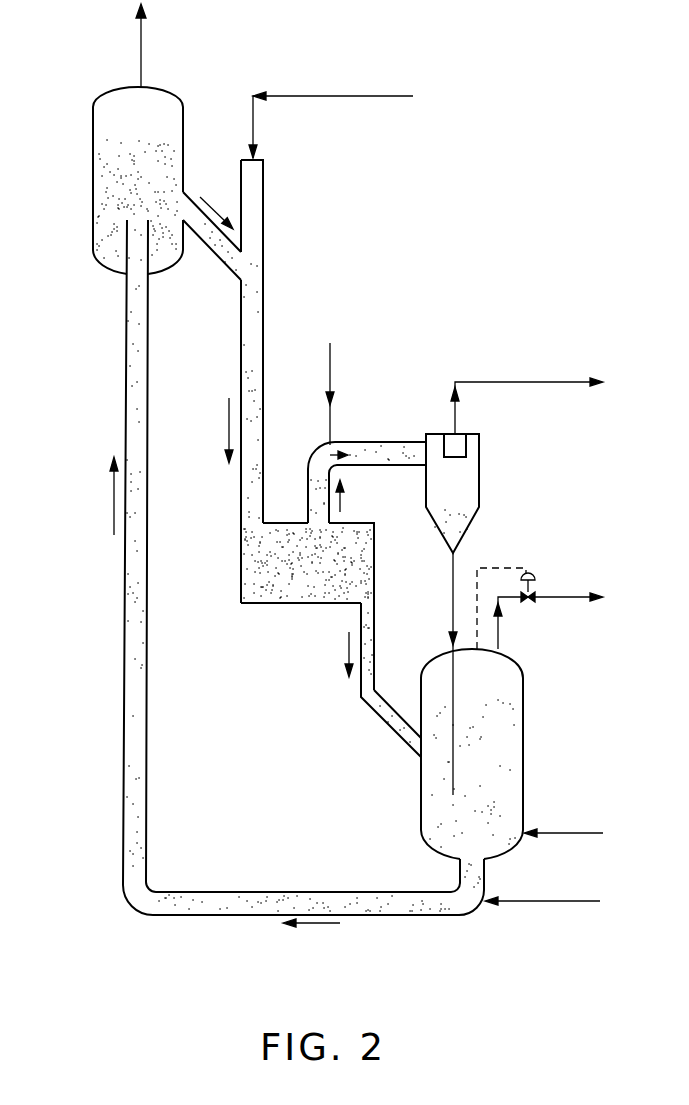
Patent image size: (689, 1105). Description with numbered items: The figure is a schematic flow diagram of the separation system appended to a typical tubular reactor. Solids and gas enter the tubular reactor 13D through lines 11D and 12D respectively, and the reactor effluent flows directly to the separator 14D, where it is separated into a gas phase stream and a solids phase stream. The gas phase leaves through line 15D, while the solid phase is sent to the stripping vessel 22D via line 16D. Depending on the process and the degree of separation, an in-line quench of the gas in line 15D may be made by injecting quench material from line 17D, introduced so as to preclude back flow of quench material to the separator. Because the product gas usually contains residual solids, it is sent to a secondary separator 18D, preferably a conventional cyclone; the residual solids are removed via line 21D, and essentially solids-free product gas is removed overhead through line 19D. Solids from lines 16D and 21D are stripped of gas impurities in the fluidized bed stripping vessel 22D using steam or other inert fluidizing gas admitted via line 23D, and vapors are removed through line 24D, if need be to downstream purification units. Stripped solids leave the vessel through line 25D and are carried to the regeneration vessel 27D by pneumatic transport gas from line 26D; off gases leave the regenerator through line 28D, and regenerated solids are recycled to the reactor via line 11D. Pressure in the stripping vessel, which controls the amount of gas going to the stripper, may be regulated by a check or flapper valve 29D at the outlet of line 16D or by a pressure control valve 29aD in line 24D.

The solids feed line 11D is at (212, 253).
The gas feed line 12D is at (350, 96).
The tubular reactor 13D is at (263, 297).
The separator 14D is at (240, 583).
The gas phase line 15D is at (308, 490).
The solids line 16D is at (387, 726).
The quench material line 17D is at (330, 375).
The secondary separator 18D is at (479, 470).
The product gas overhead line 19D is at (518, 382).
The residual solids line 21D is at (452, 596).
The stripping vessel 22D is at (523, 728).
The fluidizing gas line 23D is at (560, 833).
The stripper vapor line 24D is at (549, 597).
The stripped solids line 25D is at (123, 765).
The pneumatic transport gas line 26D is at (533, 901).
The regeneration vessel 27D is at (93, 174).
The regenerator off gas line 28D is at (140, 50).
The check or flapper valve 29D is at (416, 757).
The pressure control valve 29aD is at (535, 572).